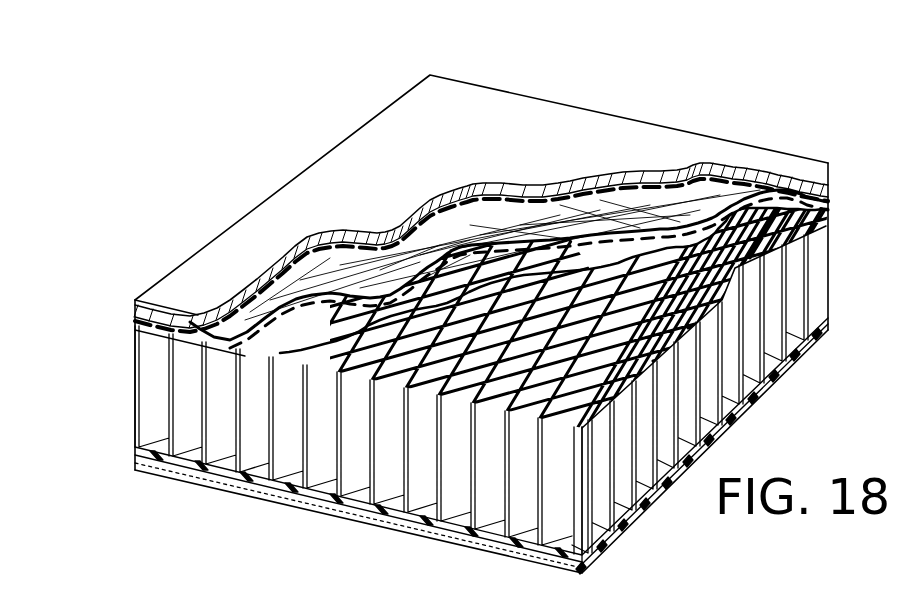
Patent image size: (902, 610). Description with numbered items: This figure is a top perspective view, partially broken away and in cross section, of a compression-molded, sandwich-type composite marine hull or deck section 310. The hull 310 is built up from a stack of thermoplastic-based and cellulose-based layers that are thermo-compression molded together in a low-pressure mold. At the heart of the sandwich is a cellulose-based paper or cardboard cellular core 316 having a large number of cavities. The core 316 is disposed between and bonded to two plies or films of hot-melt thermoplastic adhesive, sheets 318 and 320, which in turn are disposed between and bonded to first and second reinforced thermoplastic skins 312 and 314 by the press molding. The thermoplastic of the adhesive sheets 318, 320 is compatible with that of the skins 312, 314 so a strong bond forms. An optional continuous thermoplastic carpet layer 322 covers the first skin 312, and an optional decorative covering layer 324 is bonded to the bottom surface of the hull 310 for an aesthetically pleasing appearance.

The composite marine hull or deck section 310 is at (720, 71).
The first reinforced thermoplastic skin 312 is at (135, 323).
The second reinforced thermoplastic skin 314 is at (137, 466).
The cellular core 316 is at (135, 405).
The hot-melt adhesive sheet 318 is at (278, 338).
The hot-melt adhesive sheet 320 is at (135, 446).
The carpet layer 322 is at (135, 307).
The decorative covering layer 324 is at (170, 478).